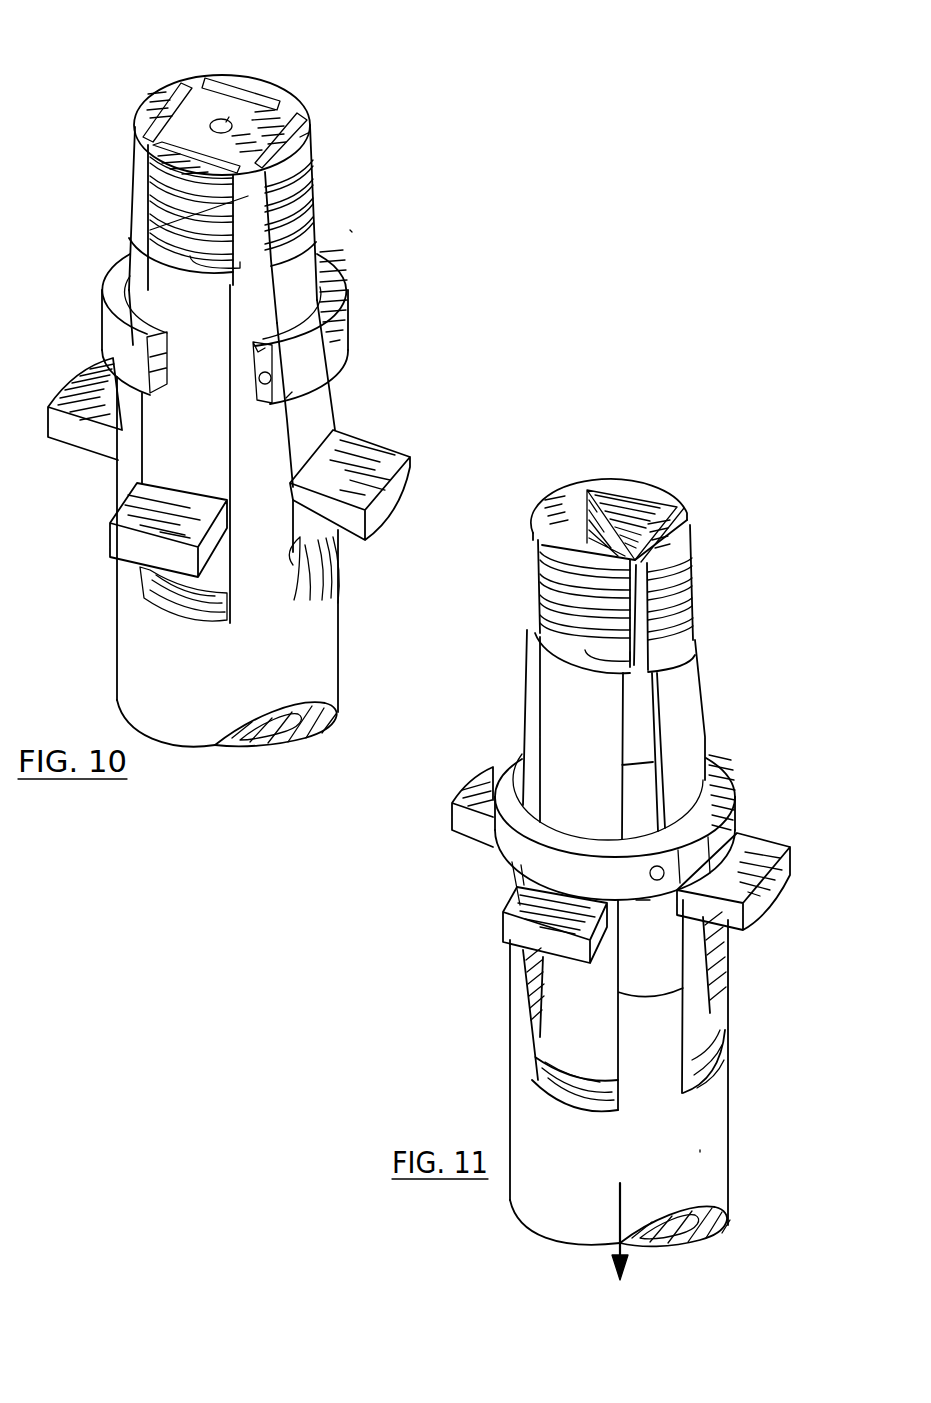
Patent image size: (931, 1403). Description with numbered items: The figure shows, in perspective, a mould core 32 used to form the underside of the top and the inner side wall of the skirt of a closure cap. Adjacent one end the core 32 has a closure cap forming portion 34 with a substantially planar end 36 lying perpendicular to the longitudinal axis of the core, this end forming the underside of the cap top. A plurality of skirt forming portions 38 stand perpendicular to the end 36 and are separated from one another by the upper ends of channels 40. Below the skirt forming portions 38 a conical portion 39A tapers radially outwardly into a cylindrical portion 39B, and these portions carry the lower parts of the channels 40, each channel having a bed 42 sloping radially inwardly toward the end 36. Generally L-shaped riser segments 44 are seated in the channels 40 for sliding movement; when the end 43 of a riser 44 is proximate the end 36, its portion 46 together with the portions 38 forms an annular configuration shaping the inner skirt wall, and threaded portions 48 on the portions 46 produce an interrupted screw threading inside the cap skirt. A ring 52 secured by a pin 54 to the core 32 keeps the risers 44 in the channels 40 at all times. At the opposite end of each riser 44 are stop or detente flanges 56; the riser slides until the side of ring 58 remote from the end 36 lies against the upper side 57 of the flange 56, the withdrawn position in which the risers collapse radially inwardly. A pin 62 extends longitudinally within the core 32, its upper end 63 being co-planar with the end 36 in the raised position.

In FIG. 10, the core 32 is at (356, 228).
In FIG. 10, the closure cap forming portion 34 is at (126, 176).
In FIG. 10, the planar end 36 is at (262, 121).
In FIG. 10, the skirt forming portions 38 is at (193, 76).
In FIG. 10, the conical portion 39A is at (205, 492).
In FIG. 11, the conical portion 39A is at (619, 1043).
In FIG. 10, the cylindrical portion 39B is at (280, 621).
In FIG. 11, the cylindrical portion 39B is at (676, 1158).
In FIG. 10, the channels 40 is at (214, 600).
In FIG. 11, the channels 40 is at (698, 1095).
In FIG. 10, the bed 42 is at (300, 553).
In FIG. 11, the bed 42 is at (703, 1047).
In FIG. 10, the end of riser 43 is at (301, 138).
In FIG. 10, the riser segments 44 is at (232, 352).
In FIG. 11, the riser segments 44 is at (614, 659).
In FIG. 10, the portion of riser 46 is at (193, 253).
In FIG. 10, the threaded portions 48 is at (292, 210).
In FIG. 10, the ring 52 is at (326, 355).
In FIG. 11, the ring 52 is at (738, 790).
In FIG. 10, the pin 54 is at (258, 382).
In FIG. 11, the pin 54 is at (650, 874).
In FIG. 10, the stop or detente flanges 56 is at (412, 478).
In FIG. 11, the stop or detente flanges 56 is at (792, 865).
In FIG. 10, the upper side of flange 57 is at (378, 460).
In FIG. 11, the upper side of flange 57 is at (762, 855).
In FIG. 10, the ring 58 is at (291, 403).
In FIG. 11, the ring 58 is at (644, 904).
In FIG. 10, the pin 62 is at (227, 122).
In FIG. 10, the upper end of pin 63 is at (212, 127).